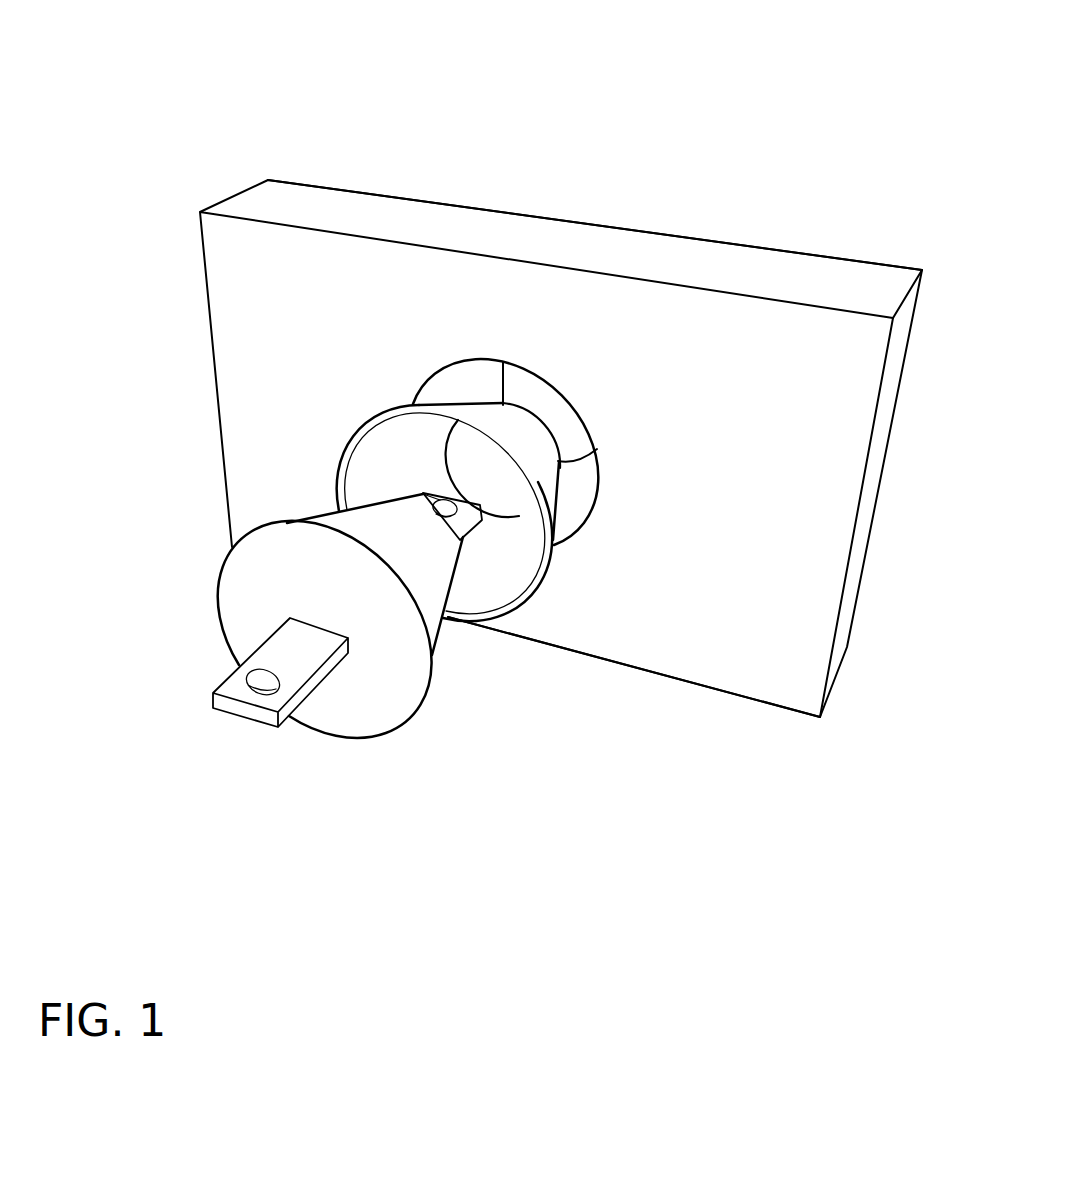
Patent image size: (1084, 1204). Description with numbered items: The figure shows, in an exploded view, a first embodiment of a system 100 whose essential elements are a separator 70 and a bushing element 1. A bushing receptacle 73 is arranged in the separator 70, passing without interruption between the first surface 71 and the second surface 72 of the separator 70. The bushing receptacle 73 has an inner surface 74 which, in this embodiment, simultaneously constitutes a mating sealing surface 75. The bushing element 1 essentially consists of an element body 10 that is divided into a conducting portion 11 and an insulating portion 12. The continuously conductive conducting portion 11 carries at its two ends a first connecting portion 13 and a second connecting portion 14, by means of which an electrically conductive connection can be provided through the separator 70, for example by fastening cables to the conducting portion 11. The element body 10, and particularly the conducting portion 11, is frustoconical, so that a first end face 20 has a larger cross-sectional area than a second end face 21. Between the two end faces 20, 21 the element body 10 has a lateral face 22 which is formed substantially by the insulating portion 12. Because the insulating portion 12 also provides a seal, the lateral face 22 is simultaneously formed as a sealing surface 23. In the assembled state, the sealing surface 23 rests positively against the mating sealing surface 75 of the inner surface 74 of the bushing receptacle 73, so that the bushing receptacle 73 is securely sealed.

The system 100 is at (727, 122).
The bushing element 1 is at (580, 878).
The element body 10 is at (385, 458).
The conducting portion 11 is at (233, 585).
The insulating portion 12 is at (491, 414).
The first connecting portion 13 is at (230, 687).
The second connecting portion 14 is at (469, 527).
The first end face 20 is at (367, 665).
The second end face 21 is at (407, 493).
The lateral face 22 is at (564, 345).
The sealing surface 23 is at (527, 437).
The separator 70 is at (862, 289).
The first surface 71 is at (739, 636).
The second surface 72 is at (811, 242).
The bushing receptacle 73 is at (562, 426).
The inner surface 74 is at (525, 538).
The mating sealing surface 75 is at (585, 498).